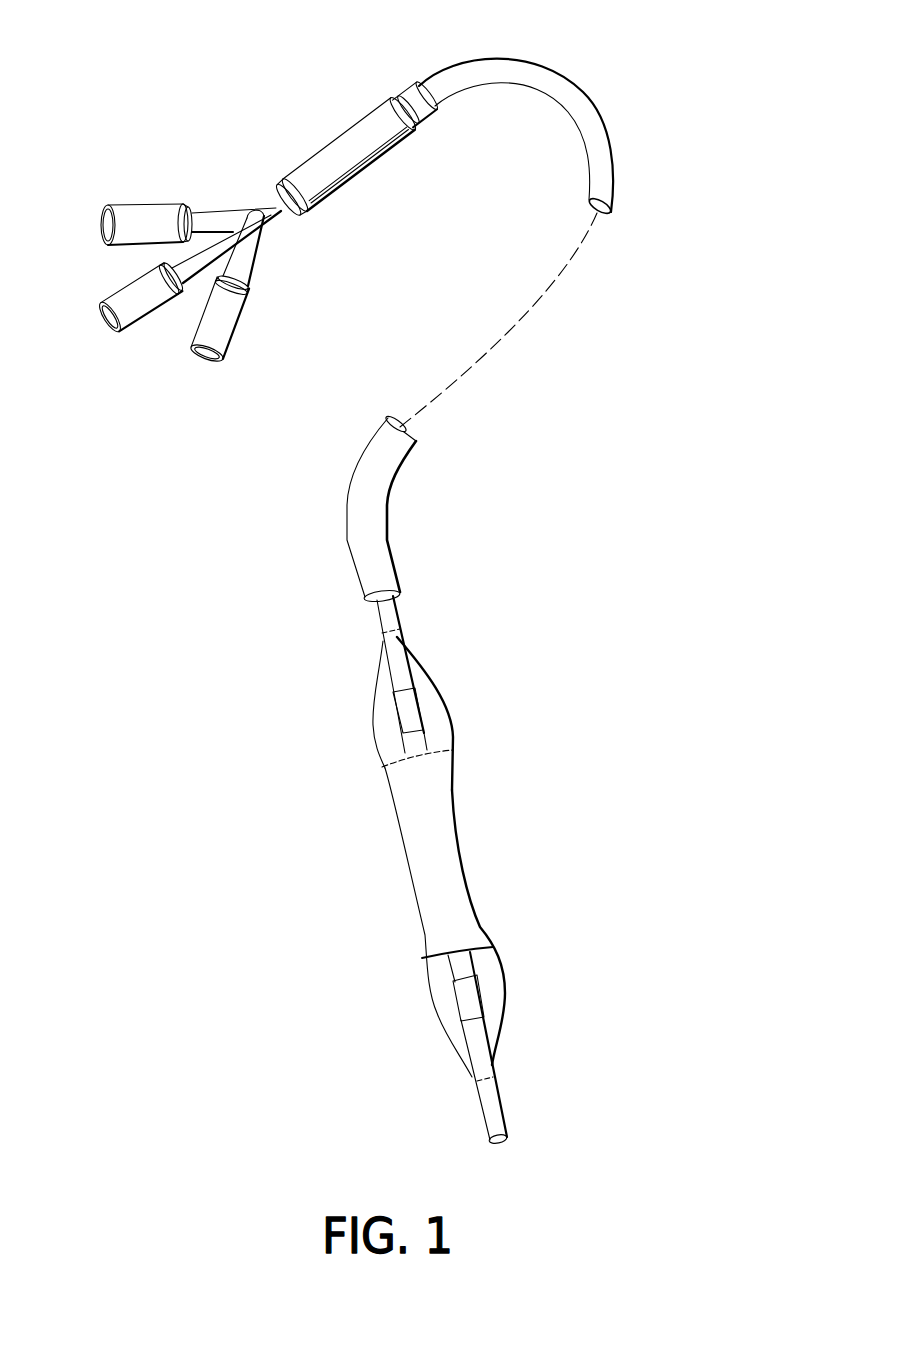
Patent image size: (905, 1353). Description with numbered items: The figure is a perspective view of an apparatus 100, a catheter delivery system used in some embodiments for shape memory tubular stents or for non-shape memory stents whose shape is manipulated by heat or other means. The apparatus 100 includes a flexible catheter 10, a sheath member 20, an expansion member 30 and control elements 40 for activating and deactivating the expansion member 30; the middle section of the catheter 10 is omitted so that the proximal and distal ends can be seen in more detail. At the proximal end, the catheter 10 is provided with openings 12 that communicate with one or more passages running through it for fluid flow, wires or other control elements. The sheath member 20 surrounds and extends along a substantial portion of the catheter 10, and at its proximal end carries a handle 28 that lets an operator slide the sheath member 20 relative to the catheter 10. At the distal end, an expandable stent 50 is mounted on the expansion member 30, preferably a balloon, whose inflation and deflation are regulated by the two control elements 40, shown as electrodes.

The apparatus 100 is at (275, 556).
The flexible catheter 10 is at (273, 207).
The openings 12 is at (143, 227).
The sheath member 20 is at (385, 498).
The handle 28 is at (350, 150).
The expansion member 30 is at (447, 703).
The control elements 40 is at (405, 716).
The expandable stent 50 is at (440, 848).